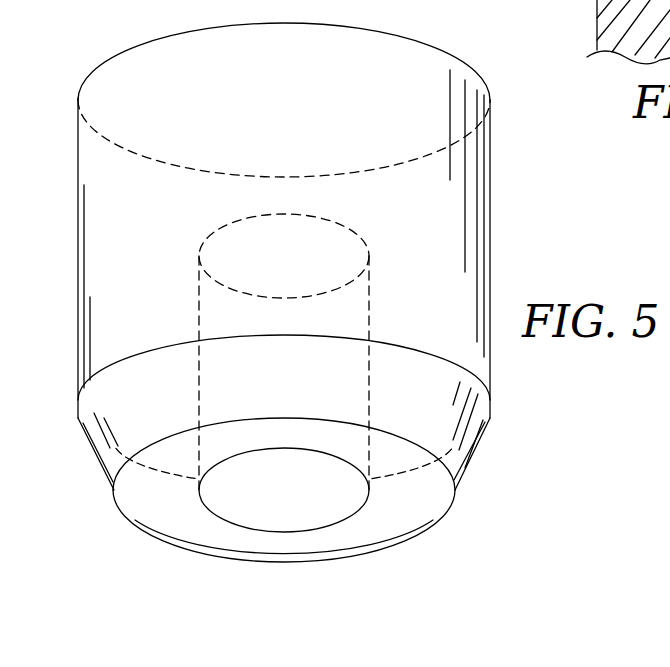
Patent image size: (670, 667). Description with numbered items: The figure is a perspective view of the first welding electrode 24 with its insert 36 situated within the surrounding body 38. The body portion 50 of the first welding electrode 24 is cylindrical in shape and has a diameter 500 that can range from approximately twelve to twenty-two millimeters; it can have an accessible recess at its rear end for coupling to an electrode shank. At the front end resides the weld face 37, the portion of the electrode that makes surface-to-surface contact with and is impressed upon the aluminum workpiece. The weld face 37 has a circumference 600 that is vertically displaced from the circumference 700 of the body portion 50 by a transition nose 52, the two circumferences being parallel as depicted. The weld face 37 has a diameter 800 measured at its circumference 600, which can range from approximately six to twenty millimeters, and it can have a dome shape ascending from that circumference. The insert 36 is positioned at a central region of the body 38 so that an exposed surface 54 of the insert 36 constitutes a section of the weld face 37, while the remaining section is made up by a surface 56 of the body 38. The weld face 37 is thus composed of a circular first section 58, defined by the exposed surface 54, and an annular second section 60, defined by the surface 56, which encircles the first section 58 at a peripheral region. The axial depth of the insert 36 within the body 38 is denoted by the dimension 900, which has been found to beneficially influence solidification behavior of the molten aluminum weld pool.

The first welding electrode 24 is at (495, 190).
The insert 36 is at (297, 505).
The weld face 37 is at (237, 570).
The body 38 is at (148, 330).
The body portion 50 is at (150, 224).
The transition nose 52 is at (466, 425).
The exposed surface 54 is at (316, 504).
The surface 56 is at (420, 484).
The first section 58 is at (241, 500).
The second section 60 is at (148, 488).
The diameter of the body portion 500 is at (488, 146).
The circumference of the weld face 600 is at (421, 442).
The circumference of the body portion 700 is at (433, 353).
The diameter of the weld face 800 is at (455, 513).
The axial depth of the insert 900 is at (196, 255).